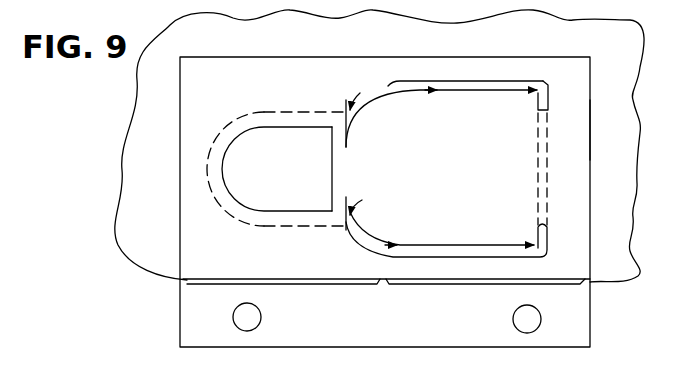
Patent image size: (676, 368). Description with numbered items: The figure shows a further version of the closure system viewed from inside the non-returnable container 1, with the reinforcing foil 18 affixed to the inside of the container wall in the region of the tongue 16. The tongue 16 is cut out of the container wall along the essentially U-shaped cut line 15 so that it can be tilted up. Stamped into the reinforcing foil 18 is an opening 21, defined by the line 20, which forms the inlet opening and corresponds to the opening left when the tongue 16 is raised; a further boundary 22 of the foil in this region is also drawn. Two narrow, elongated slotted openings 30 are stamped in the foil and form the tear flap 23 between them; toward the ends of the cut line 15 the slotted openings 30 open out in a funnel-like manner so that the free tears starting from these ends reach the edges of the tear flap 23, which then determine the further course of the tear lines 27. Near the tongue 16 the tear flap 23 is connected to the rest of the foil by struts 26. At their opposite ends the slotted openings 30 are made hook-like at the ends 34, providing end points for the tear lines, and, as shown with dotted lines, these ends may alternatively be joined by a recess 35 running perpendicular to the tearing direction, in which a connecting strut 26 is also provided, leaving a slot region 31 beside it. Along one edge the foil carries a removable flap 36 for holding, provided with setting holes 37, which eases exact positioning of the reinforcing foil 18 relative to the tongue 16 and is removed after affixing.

The non-returnable container 1 is at (622, 97).
The cut line 15 is at (227, 130).
The tongue 16 is at (208, 170).
The reinforcing foil 18 is at (203, 263).
The line defining the opening 20 is at (226, 190).
The opening 21 is at (290, 198).
The recess edge 22 is at (285, 117).
The tear flap 23 is at (497, 228).
The connecting struts 26 is at (348, 130).
The tear lines 27 is at (387, 90).
The slotted openings 30 is at (462, 82).
The slot 31 is at (570, 140).
The hook-like ends 34 is at (548, 98).
The recess 35 is at (547, 187).
The flap for holding 36 is at (575, 318).
The setting holes 37 is at (249, 319).